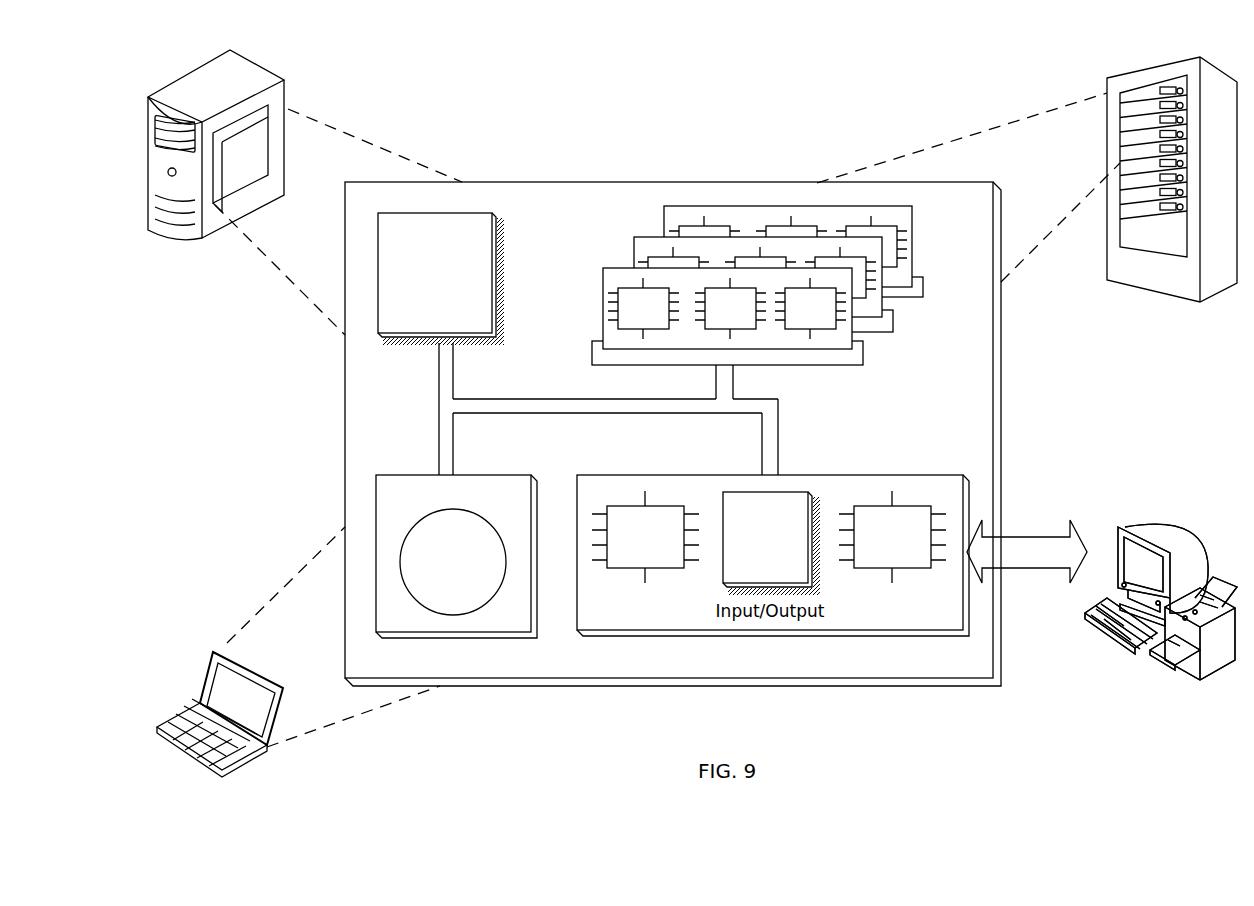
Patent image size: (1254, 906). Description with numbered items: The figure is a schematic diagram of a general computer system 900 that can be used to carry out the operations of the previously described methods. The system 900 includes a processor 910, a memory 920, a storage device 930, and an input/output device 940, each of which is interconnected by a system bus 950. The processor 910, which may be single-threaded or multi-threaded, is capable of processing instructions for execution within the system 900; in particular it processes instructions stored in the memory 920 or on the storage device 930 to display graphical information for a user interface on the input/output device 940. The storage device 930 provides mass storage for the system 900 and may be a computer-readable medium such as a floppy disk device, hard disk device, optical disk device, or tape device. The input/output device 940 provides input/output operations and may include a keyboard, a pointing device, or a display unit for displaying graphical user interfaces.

The computer system 900 is at (510, 68).
The processor 910 is at (441, 279).
The memory 920 is at (917, 332).
The storage device 930 is at (456, 556).
The input/output device 940 is at (1118, 530).
The system bus 950 is at (606, 413).